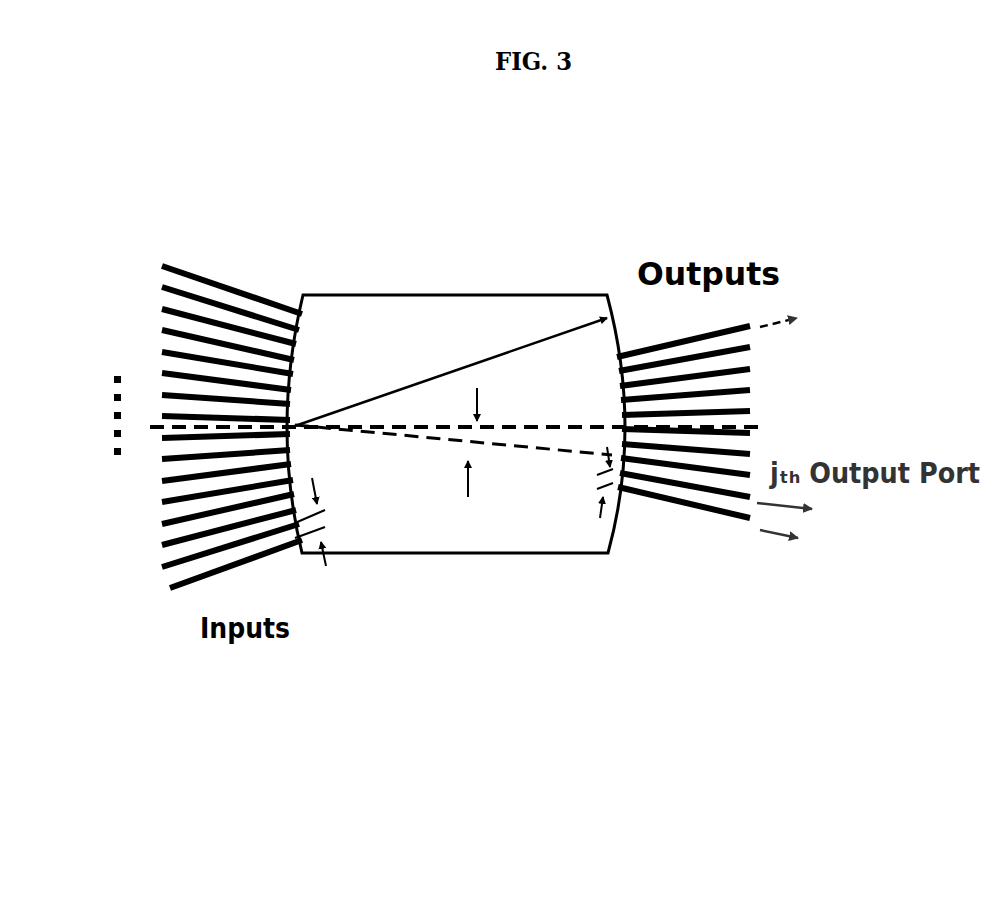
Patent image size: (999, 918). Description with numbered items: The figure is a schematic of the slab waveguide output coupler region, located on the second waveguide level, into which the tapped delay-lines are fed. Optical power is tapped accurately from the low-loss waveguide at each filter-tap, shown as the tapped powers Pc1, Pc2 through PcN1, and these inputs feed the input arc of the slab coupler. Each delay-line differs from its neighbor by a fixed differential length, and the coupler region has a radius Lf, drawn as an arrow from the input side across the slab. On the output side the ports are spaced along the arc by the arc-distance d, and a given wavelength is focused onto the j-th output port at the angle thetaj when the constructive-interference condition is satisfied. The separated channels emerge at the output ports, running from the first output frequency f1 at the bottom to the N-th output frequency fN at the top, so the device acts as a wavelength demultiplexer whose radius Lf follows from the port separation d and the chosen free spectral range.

The slab coupler radius Lf is at (449, 372).
The focusing angle of the j-th output port thetaj is at (465, 468).
The arc-distance between output ports d is at (454, 506).
The optical power tapped at the first filter-tap Pc1 is at (120, 243).
The optical power tapped at the second filter-tap Pc2 is at (120, 299).
The optical power tapped at the N_t-th filter-tap PcN1 is at (125, 589).
The output frequency of the N-th output port fN is at (801, 310).
The output frequency of the first output port f1 is at (784, 547).